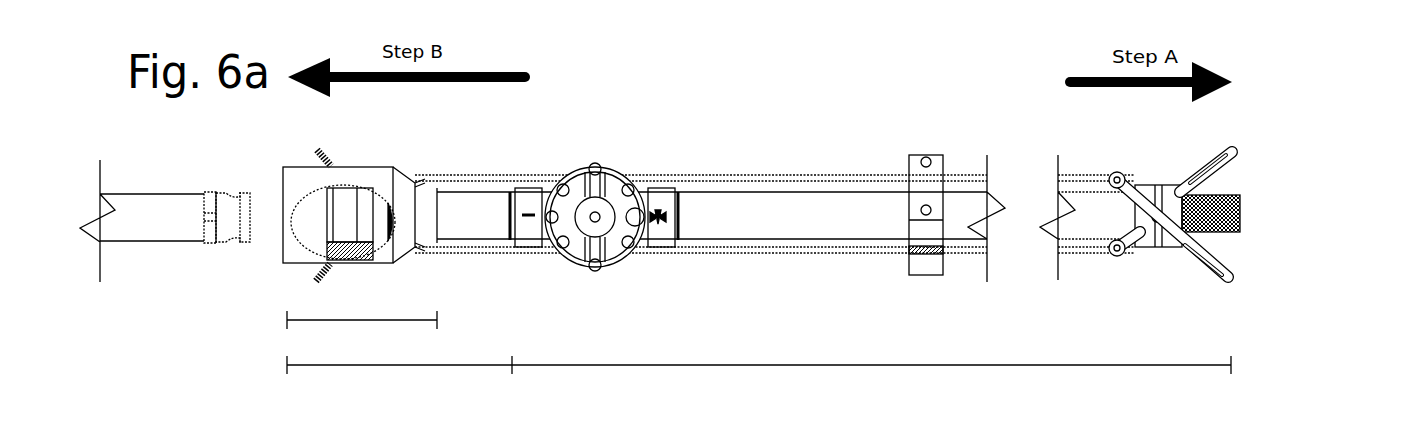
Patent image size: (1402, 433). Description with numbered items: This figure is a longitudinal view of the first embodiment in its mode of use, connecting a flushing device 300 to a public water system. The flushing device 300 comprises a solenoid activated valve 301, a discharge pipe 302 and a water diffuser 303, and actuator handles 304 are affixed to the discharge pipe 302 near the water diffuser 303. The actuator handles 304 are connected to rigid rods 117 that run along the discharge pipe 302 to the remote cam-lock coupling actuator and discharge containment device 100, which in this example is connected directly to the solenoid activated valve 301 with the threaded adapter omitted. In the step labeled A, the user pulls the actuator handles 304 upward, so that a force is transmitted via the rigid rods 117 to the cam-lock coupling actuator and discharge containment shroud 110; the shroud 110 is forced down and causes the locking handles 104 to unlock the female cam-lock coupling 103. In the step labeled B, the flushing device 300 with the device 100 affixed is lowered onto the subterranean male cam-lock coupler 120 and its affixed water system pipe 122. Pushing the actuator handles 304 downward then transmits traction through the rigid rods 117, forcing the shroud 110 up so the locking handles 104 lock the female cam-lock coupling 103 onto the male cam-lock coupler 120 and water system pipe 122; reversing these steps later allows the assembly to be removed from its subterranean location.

The remote cam-lock coupling actuator and discharge containment device 100 is at (399, 373).
The female cam-lock coupling 103 is at (342, 215).
The locking handles 104 is at (312, 150).
The cam-lock coupling actuator and discharge containment shroud 110 is at (360, 257).
The rigid rods 117 is at (812, 177).
The subterranean male cam-lock coupler 120 is at (215, 244).
The water system pipe 122 is at (153, 243).
The flushing device 300 is at (871, 373).
The solenoid activated valve 301 is at (620, 165).
The discharge pipe 302 is at (795, 238).
The water diffuser 303 is at (1242, 206).
The actuator handles 304 is at (1221, 266).